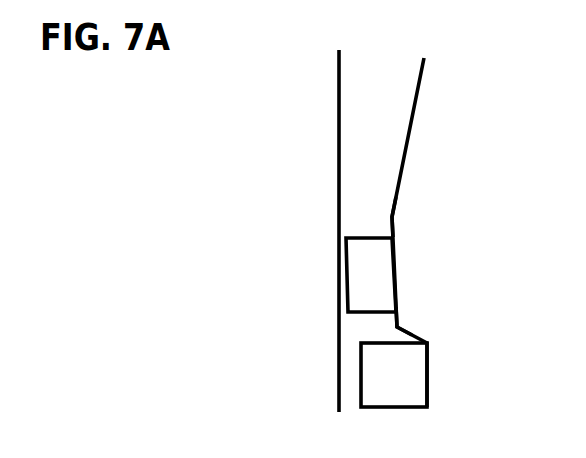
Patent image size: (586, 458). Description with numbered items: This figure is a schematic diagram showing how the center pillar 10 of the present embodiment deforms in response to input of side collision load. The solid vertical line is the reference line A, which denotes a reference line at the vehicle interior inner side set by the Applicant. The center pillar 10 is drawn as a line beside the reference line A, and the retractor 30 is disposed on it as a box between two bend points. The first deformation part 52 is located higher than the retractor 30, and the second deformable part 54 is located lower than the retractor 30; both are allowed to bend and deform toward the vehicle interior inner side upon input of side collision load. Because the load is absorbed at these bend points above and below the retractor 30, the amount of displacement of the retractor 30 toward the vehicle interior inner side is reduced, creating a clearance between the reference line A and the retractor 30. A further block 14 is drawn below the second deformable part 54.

The reference line A is at (337, 118).
The center pillar 10 is at (415, 140).
The retractor 30 is at (375, 236).
The first deformation part 52 is at (394, 218).
The second deformable part 54 is at (400, 326).
The second block 14 is at (393, 409).